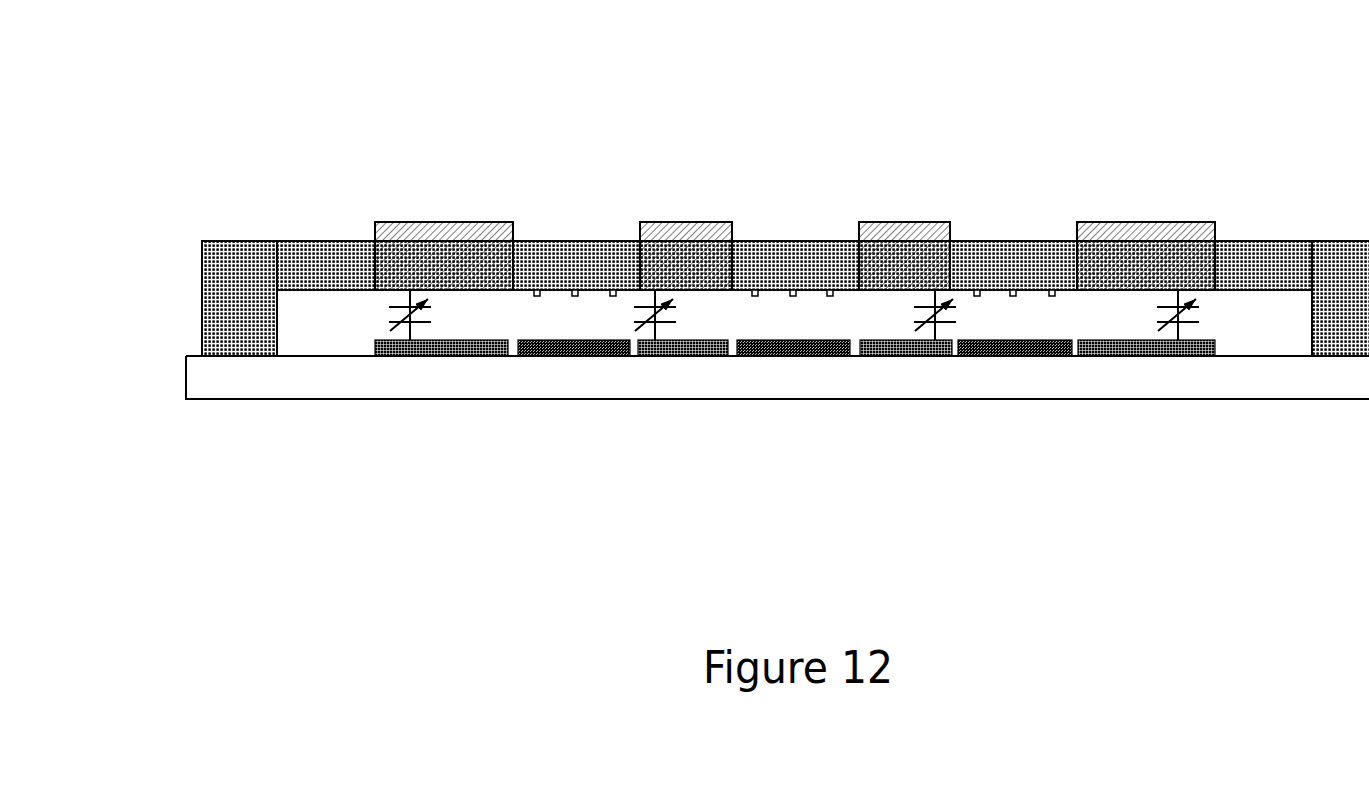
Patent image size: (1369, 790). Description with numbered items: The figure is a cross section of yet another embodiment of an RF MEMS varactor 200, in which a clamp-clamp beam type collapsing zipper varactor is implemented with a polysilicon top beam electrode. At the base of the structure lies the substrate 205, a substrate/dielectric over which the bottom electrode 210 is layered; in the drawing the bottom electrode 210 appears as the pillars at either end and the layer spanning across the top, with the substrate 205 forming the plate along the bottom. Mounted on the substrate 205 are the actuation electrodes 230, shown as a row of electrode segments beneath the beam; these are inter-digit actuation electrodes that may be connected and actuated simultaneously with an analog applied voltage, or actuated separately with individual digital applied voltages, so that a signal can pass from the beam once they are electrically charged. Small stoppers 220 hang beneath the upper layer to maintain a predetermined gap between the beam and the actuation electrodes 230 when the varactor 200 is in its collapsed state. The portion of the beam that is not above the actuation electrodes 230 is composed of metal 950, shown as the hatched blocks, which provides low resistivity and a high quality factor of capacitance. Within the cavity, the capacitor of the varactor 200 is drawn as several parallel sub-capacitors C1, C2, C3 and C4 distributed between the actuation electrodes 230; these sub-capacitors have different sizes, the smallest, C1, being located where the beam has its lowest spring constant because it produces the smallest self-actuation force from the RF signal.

The RF MEMS varactor 200 is at (712, 313).
The substrate 205 is at (185, 395).
The bottom electrode 210 is at (202, 307).
The stoppers 220 is at (617, 289).
The actuation electrodes 230 is at (955, 345).
The metal 950 is at (393, 222).
The sub-capacitor C1 is at (1146, 315).
The sub-capacitor C2 is at (921, 315).
The sub-capacitor C3 is at (668, 315).
The sub-capacitor C4 is at (425, 315).